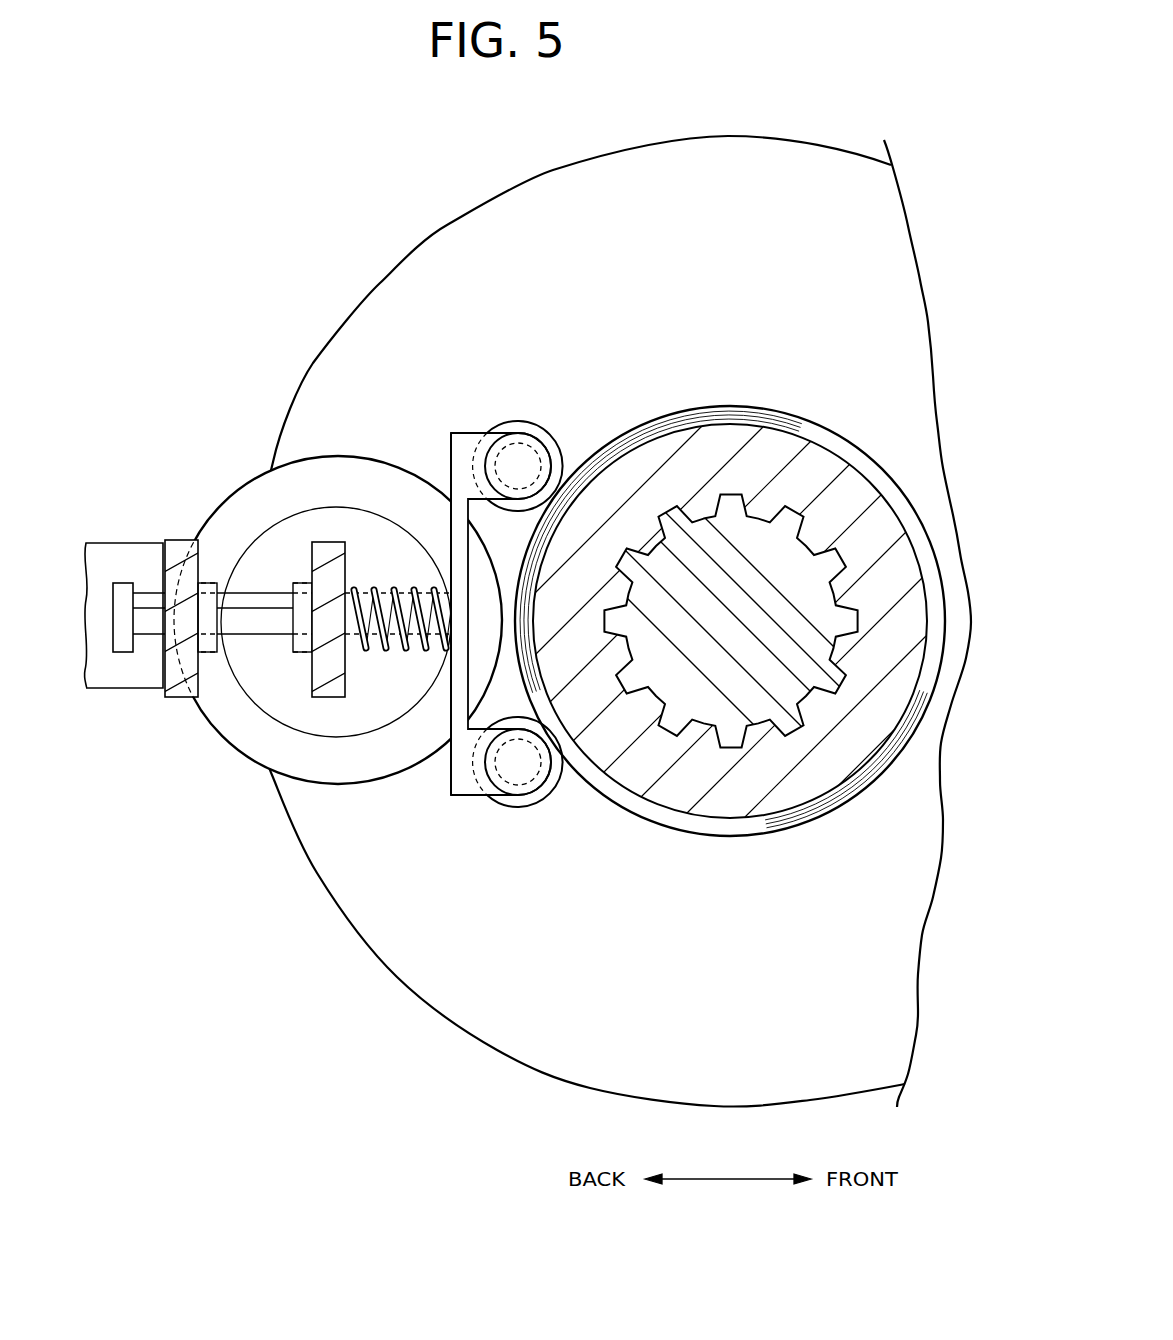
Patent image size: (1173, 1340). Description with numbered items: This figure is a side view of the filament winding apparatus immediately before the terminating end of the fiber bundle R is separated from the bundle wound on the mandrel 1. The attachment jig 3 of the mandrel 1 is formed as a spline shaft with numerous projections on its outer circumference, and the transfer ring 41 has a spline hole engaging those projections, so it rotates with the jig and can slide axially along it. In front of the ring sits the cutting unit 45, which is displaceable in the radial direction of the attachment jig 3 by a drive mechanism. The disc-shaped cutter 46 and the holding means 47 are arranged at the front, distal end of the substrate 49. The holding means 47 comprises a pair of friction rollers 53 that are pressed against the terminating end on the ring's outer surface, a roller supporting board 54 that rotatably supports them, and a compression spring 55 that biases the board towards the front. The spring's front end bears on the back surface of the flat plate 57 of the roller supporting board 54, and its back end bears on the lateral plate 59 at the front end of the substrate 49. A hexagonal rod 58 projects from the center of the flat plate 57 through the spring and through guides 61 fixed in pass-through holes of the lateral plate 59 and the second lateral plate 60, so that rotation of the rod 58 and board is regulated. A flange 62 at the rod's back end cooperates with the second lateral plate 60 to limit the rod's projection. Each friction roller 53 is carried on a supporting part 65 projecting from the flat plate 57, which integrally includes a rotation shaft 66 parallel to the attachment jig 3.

The mandrel 1 is at (398, 302).
The attachment jig 3 is at (755, 712).
The transfer ring 41 is at (829, 458).
The fiber bundle R is at (697, 411).
The cutting unit 45 is at (213, 846).
The cutter 46 is at (237, 487).
The holding means 47 is at (546, 388).
The substrate 49 is at (120, 690).
The friction roller 53 is at (566, 446).
The roller supporting board 54 is at (451, 782).
The compression spring 55 is at (382, 655).
The flat plate 57 is at (447, 527).
The rod 58 is at (262, 640).
The lateral plate 59 is at (332, 540).
The second lateral plate 60 is at (187, 542).
The guide 61 is at (262, 587).
The flange 62 is at (122, 582).
The supporting part 65 is at (483, 435).
The rotation shaft 66 is at (497, 444).